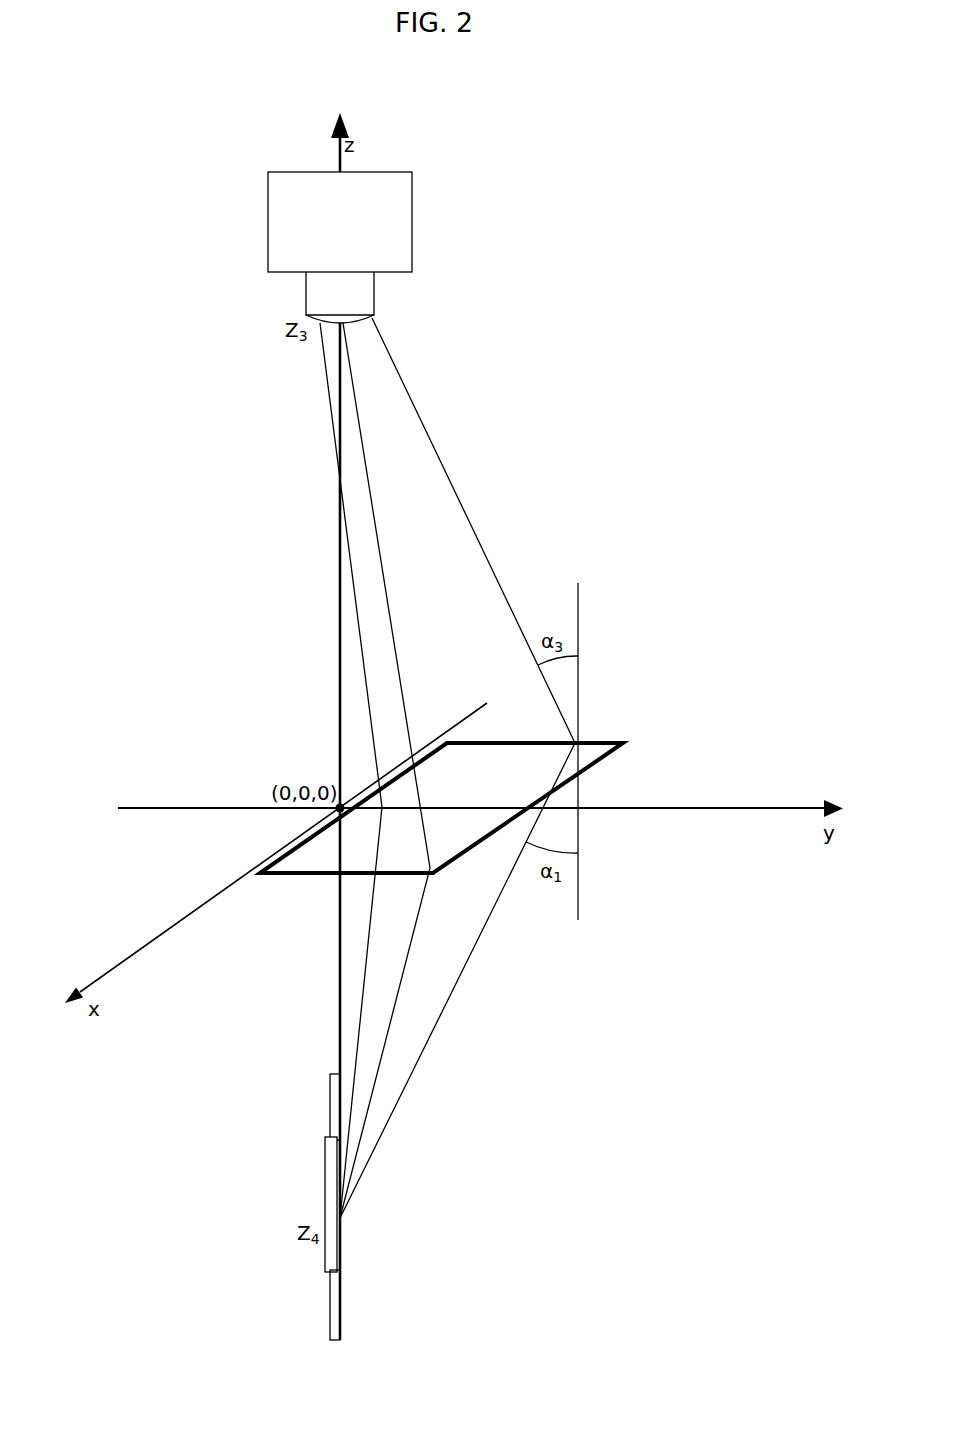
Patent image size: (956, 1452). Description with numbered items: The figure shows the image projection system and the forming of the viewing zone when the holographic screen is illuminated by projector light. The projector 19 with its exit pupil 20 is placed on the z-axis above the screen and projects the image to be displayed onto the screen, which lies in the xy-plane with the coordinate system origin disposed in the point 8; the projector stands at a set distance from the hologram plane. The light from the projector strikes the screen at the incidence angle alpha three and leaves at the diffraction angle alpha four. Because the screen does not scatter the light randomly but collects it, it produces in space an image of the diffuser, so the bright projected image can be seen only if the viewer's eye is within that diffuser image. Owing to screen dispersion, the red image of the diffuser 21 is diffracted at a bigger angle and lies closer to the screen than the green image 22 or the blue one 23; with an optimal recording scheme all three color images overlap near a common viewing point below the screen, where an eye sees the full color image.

The projector 19 is at (412, 218).
The exit pupil 20 is at (375, 293).
The coordinate system origin point 8 is at (328, 812).
The red image of the diffuser 21 is at (330, 1086).
The green image of the diffuser 22 is at (325, 1160).
The blue image of the diffuser 23 is at (330, 1305).